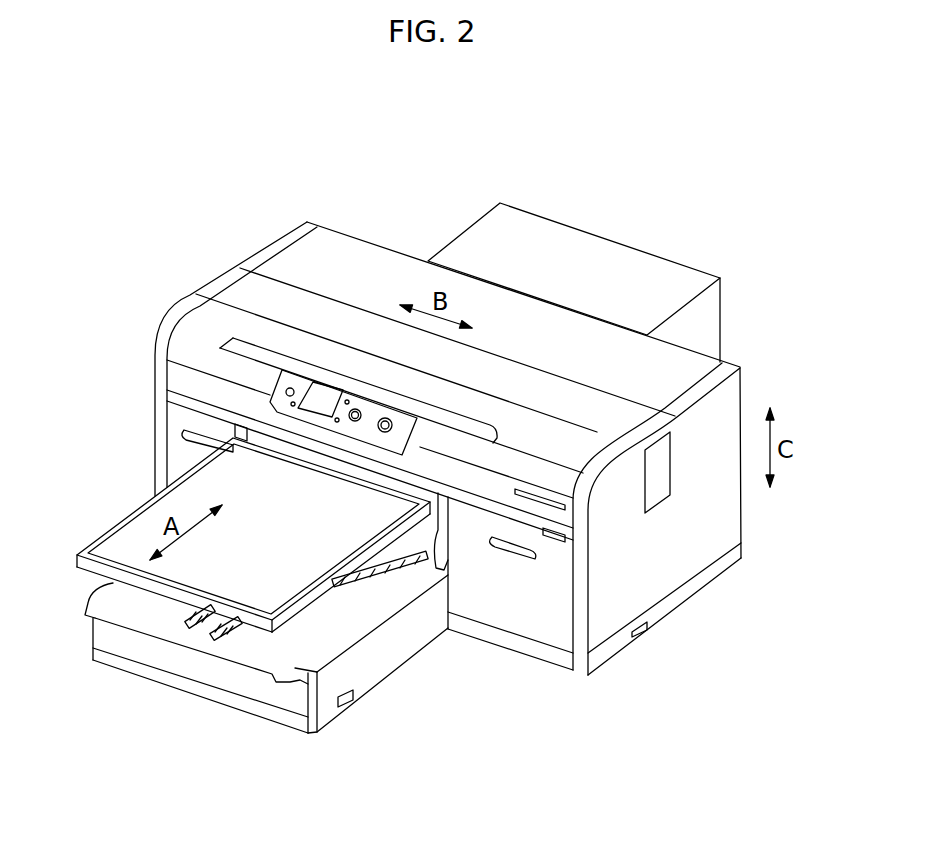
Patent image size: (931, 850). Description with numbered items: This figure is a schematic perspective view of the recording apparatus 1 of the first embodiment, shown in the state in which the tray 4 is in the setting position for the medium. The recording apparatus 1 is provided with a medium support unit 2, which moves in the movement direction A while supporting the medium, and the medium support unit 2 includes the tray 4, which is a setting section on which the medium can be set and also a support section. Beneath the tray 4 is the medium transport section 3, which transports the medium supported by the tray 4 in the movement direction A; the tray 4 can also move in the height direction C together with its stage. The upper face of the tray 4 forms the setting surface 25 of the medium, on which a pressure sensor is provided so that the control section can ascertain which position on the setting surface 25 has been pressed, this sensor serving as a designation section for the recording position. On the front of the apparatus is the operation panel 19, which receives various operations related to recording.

The recording apparatus 1 is at (728, 205).
The medium support unit 2 is at (141, 452).
The medium transport section 3 is at (360, 670).
The tray 4 is at (200, 574).
The operation panel 19 is at (320, 398).
The setting surface 25 is at (257, 583).